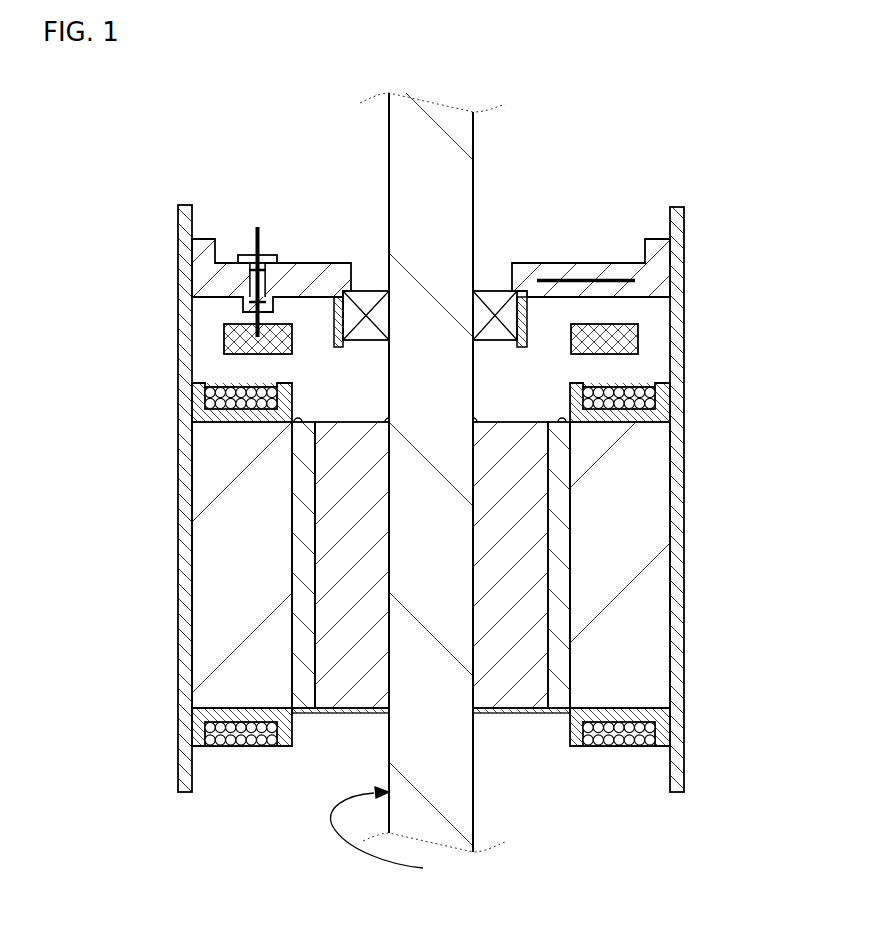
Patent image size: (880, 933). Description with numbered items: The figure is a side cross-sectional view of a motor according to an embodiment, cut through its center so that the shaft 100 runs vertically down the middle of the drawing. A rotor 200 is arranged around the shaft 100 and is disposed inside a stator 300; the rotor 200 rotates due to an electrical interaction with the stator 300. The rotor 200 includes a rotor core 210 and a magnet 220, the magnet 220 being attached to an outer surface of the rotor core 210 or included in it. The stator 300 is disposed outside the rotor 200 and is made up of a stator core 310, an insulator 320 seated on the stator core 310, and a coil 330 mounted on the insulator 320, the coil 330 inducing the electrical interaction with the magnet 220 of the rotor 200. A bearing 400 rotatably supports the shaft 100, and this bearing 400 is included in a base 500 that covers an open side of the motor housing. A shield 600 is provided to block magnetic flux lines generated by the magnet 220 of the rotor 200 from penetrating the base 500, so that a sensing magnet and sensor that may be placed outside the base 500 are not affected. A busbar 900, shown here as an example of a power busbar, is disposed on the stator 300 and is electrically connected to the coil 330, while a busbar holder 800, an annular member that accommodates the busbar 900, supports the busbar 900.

The shaft 100 is at (371, 156).
The rotor 200 is at (557, 565).
The rotor core 210 is at (507, 632).
The magnet 220 is at (560, 565).
The stator 300 is at (504, 564).
The stator core 310 is at (652, 478).
The insulator 320 is at (655, 413).
The coil 330 is at (658, 398).
The bearing 400 is at (168, 484).
The base 500 is at (607, 256).
The shield 600 is at (551, 268).
The busbar holder 800 is at (237, 335).
The busbar 900 is at (262, 229).